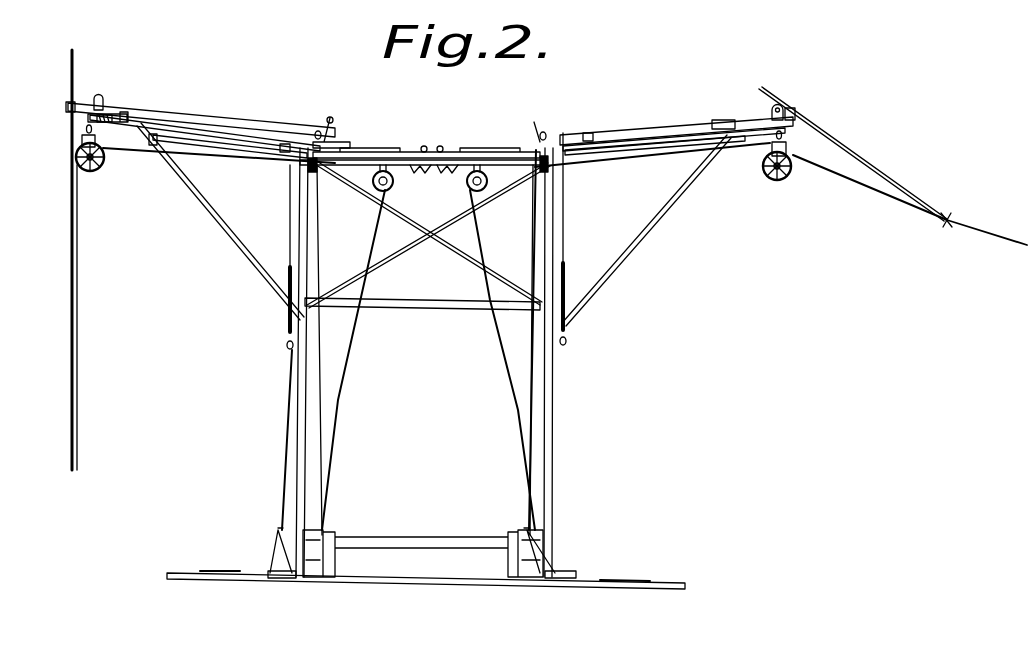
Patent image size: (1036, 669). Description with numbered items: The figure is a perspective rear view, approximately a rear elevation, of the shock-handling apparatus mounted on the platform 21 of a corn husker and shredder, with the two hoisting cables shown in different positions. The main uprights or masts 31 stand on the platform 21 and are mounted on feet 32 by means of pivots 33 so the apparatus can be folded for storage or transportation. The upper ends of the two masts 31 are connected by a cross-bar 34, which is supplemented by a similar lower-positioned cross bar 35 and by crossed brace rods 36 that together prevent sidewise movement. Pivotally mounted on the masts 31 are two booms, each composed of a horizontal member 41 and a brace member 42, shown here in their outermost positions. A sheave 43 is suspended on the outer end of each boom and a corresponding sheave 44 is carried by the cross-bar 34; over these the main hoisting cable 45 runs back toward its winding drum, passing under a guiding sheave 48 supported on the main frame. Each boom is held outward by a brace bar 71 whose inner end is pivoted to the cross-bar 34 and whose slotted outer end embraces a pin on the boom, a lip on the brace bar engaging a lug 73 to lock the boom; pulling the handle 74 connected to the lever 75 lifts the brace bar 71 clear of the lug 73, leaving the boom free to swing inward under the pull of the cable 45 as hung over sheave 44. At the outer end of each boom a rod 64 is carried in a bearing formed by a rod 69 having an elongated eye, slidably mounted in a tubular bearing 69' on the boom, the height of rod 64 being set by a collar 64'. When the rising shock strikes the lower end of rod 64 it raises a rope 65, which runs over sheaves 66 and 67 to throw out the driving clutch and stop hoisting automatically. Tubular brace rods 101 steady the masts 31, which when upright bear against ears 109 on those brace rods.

The platform 21 is at (465, 587).
The main uprights or masts 31 is at (298, 370).
The feet 32 is at (273, 562).
The pivots 33 is at (275, 548).
The cross-bar 34 is at (429, 152).
The lower cross bar 35 is at (440, 310).
The crossed brace rods 36 is at (397, 257).
The horizontal boom member 41 is at (240, 137).
The brace member 42 is at (245, 258).
The sheave 43 is at (97, 168).
The sheave 44 is at (381, 191).
The main hoisting cable 45 is at (80, 430).
The guiding sheave 48 is at (308, 525).
The rod 64 is at (478, 243).
The collar 64' is at (419, 93).
The rope 65 is at (217, 114).
The sheave 66 is at (100, 110).
The sheave 67 is at (325, 127).
The bearing rod 69 is at (374, 107).
The tubular bearing 69' is at (133, 93).
The brace bar 71 is at (228, 141).
The lug 73 is at (151, 137).
The handle 74 is at (288, 333).
The lever 75 is at (283, 152).
The brace rods 101 is at (319, 375).
The ears 109 is at (308, 172).